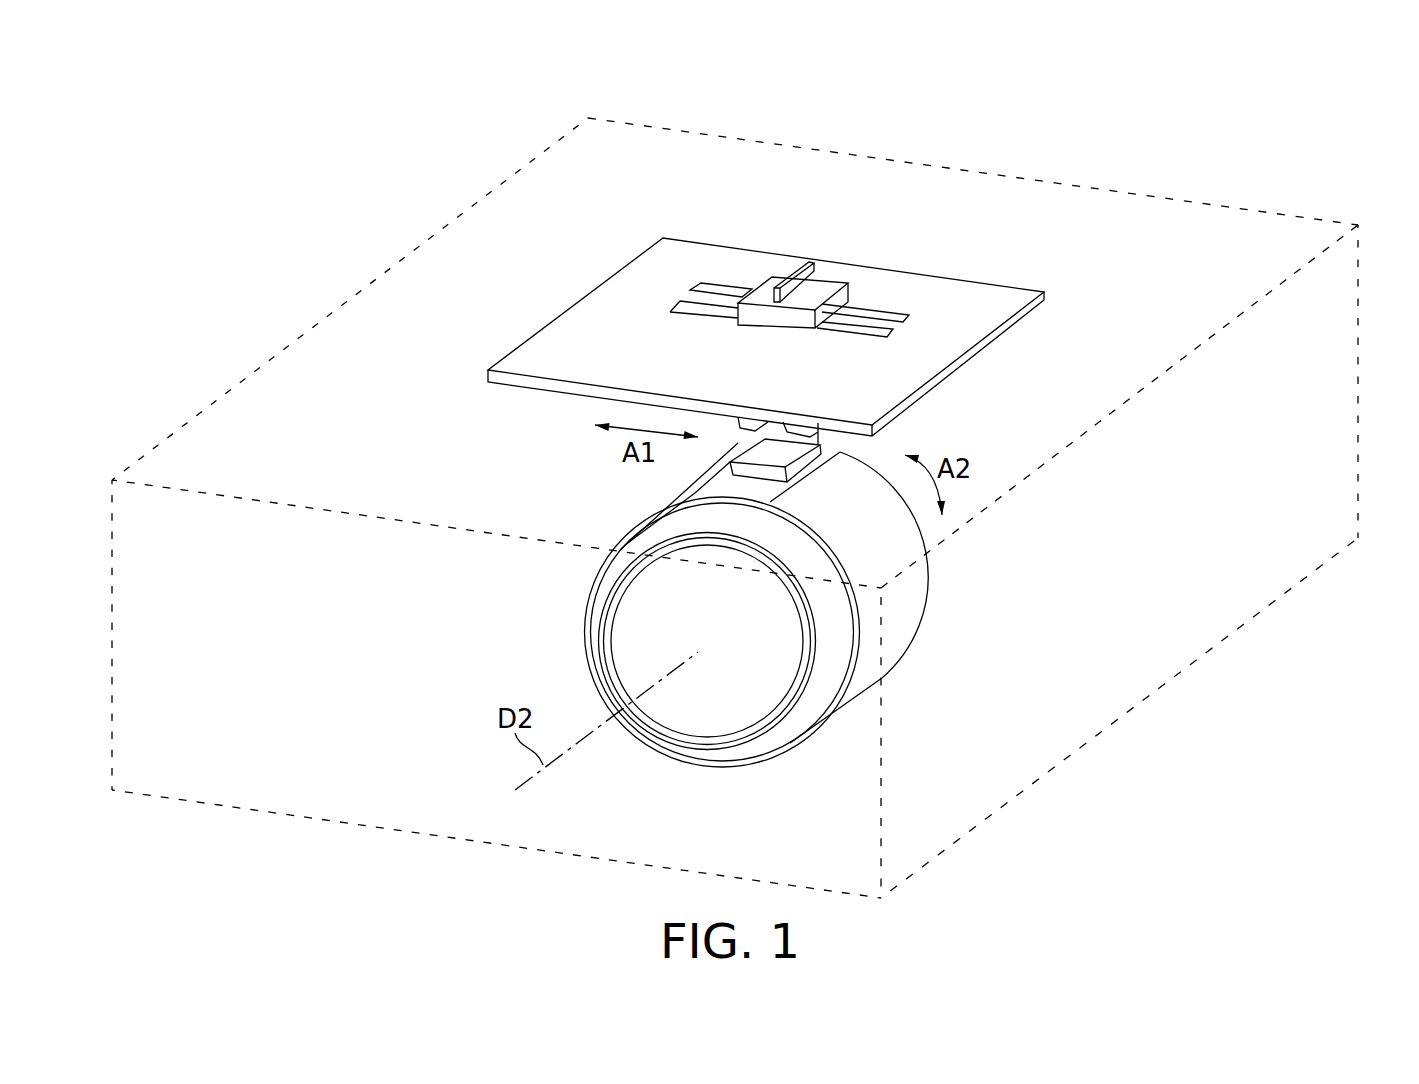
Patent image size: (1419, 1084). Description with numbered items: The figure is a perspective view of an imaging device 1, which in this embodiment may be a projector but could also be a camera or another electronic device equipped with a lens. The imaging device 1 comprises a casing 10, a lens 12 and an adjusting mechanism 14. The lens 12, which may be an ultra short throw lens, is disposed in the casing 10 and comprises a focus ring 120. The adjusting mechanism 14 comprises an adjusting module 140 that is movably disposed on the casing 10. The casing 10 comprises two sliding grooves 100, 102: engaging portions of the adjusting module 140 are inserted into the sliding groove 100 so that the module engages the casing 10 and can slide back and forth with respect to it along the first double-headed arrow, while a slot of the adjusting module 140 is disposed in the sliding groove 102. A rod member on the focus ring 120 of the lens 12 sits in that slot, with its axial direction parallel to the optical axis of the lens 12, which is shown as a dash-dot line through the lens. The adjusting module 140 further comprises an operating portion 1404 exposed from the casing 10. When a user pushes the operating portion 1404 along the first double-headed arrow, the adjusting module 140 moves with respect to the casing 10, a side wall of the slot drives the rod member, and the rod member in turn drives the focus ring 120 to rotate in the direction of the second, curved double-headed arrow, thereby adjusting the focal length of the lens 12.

The imaging device 1 is at (1308, 100).
The casing 10 is at (966, 297).
The sliding groove 100 is at (715, 285).
The sliding groove 102 is at (690, 307).
The lens 12 is at (856, 678).
The focus ring 120 is at (907, 607).
The adjusting mechanism 14 is at (855, 274).
The adjusting module 140 is at (859, 197).
The operating portion 1404 is at (810, 262).